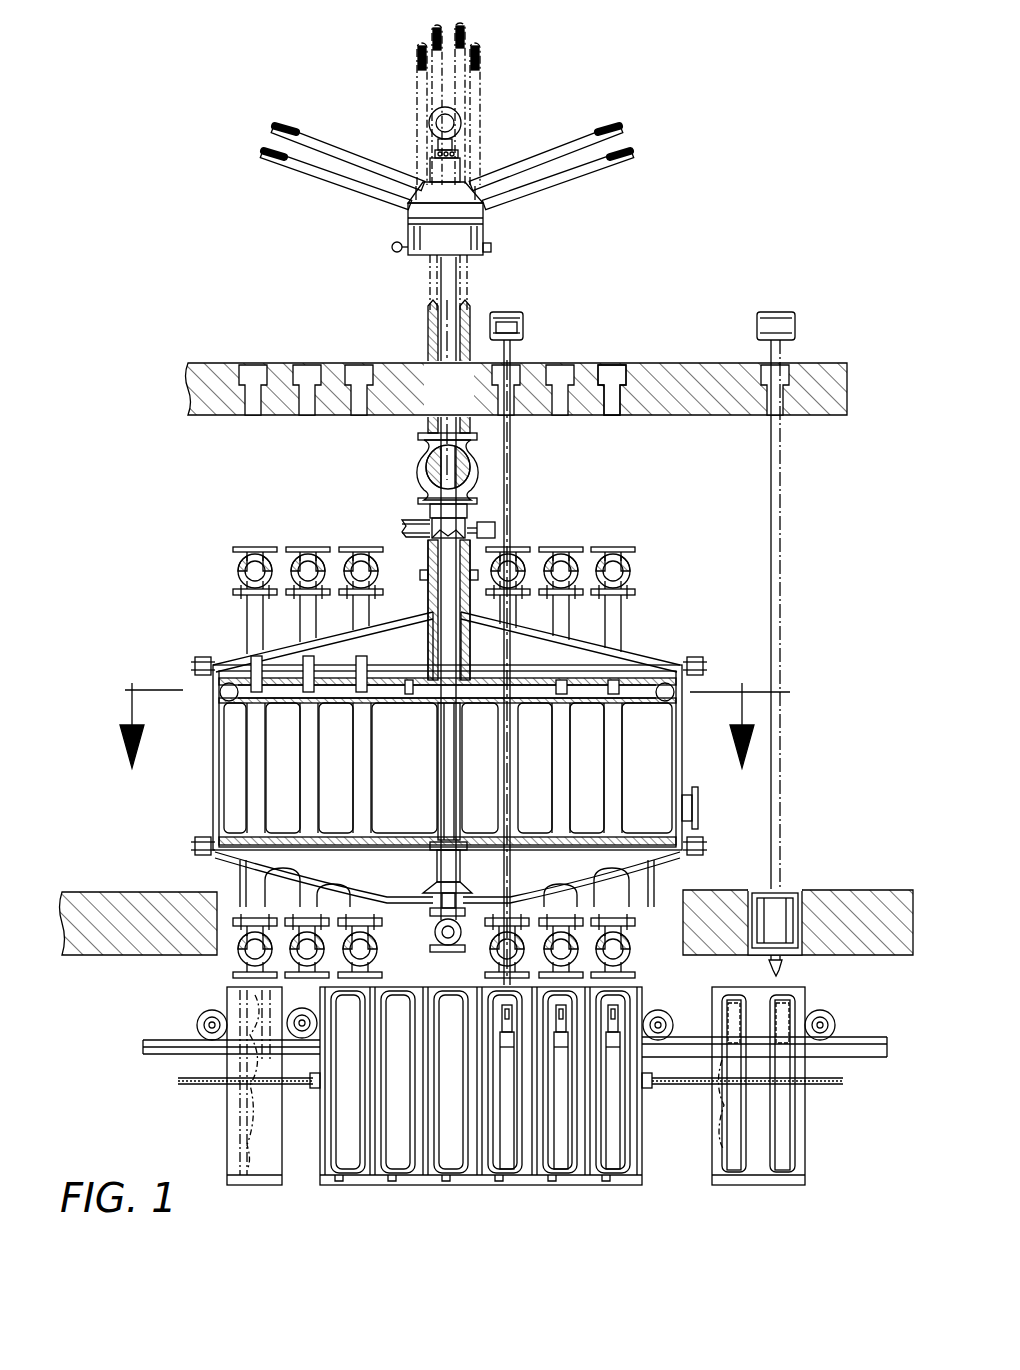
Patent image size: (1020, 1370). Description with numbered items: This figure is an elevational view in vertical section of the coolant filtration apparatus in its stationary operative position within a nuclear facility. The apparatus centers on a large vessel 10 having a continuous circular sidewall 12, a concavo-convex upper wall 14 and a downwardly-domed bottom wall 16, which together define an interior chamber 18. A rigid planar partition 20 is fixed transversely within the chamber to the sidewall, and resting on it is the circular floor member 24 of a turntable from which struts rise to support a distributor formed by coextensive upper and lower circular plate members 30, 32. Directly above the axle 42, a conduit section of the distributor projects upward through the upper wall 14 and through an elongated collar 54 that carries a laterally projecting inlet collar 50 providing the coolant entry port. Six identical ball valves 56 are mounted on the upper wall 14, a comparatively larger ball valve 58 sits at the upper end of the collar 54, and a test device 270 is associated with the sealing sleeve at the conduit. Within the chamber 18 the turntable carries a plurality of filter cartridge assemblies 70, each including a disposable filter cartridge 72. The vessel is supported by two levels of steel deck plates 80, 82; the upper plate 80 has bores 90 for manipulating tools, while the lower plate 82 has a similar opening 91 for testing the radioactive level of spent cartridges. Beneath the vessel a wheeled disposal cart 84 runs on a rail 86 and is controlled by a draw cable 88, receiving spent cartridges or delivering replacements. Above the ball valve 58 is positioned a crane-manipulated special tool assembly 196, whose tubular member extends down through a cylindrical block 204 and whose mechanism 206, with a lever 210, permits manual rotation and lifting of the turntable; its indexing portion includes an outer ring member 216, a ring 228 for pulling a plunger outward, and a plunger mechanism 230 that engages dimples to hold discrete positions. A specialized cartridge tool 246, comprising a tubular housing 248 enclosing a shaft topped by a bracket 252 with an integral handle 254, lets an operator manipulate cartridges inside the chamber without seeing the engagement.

The vessel 10 is at (210, 622).
The sidewall 12 is at (676, 750).
The upper wall 14 is at (677, 630).
The bottom wall 16 is at (638, 866).
The interior chamber 18 is at (416, 771).
The partition 20 is at (422, 860).
The floor member 24 is at (483, 832).
The upper circular plate member 30 is at (640, 712).
The lower circular plate member 32 is at (635, 672).
The axle 42 is at (441, 806).
The inlet collar 50 is at (406, 520).
The elongated collar 54 is at (430, 562).
The ball valves 56 is at (244, 546).
The ball valve 58 is at (416, 464).
The filter cartridge assemblies 70 is at (364, 668).
The filter cartridge 72 is at (560, 1145).
The deck plate 80 is at (187, 360).
The deck plate 82 is at (106, 890).
The disposal cart 84 is at (626, 1190).
The rail 86 is at (169, 1027).
The draw cable 88 is at (197, 1087).
The bores 90 is at (620, 360).
The opening 91 is at (793, 891).
The tool assembly 196 is at (377, 233).
The cylindrical block 204 is at (424, 327).
The mechanism 206 is at (348, 148).
The lever 210 is at (338, 183).
The outer ring member 216 is at (472, 265).
The ring 228 is at (396, 248).
The plunger mechanism 230 is at (494, 242).
The tool 246 is at (807, 549).
The tubular housing 248 is at (517, 443).
The bracket 252 is at (536, 302).
The handle 254 is at (525, 339).
The test device 270 is at (506, 522).